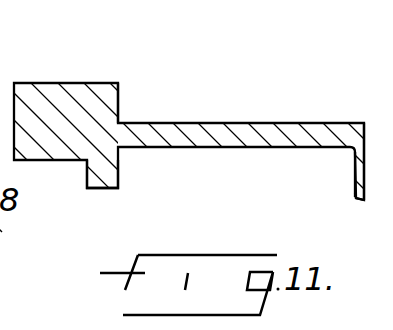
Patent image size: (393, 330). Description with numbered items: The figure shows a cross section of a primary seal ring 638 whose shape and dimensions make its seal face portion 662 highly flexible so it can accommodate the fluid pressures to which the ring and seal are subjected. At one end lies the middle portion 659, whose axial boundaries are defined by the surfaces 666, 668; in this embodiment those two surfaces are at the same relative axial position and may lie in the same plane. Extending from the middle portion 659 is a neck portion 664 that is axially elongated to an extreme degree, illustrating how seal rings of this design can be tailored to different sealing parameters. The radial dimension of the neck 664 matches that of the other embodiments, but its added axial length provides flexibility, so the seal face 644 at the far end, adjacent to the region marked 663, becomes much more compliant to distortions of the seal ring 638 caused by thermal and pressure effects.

The seal ring 638 is at (245, 112).
The middle portion 659 is at (78, 97).
The neck portion 664 is at (220, 123).
The surface 666 is at (119, 103).
The surface 668 is at (119, 164).
The seal face 644 is at (370, 157).
The inner edge of leg 663 is at (353, 175).
The seal face portion 662 is at (357, 203).